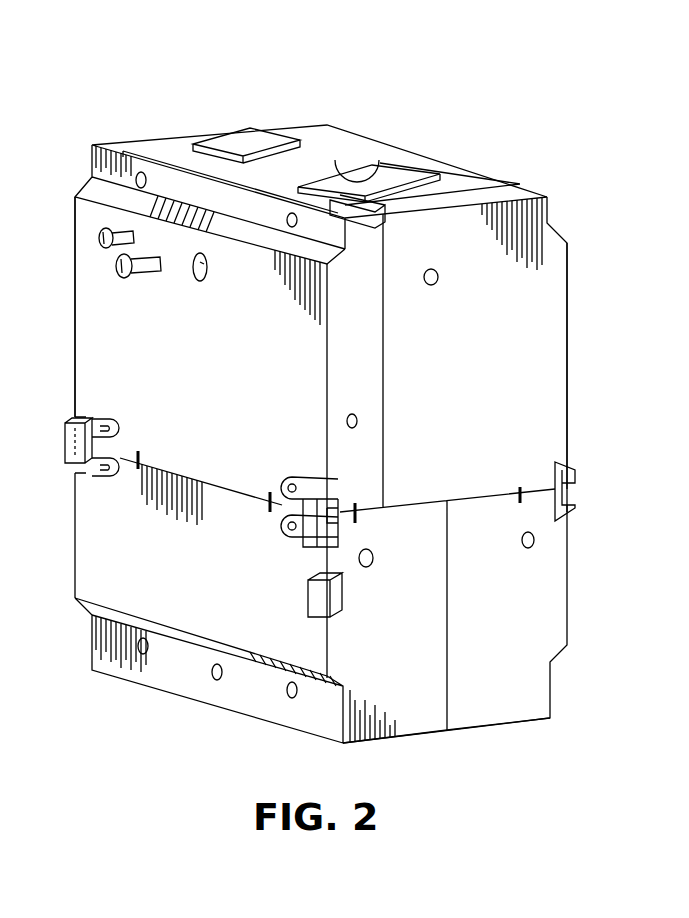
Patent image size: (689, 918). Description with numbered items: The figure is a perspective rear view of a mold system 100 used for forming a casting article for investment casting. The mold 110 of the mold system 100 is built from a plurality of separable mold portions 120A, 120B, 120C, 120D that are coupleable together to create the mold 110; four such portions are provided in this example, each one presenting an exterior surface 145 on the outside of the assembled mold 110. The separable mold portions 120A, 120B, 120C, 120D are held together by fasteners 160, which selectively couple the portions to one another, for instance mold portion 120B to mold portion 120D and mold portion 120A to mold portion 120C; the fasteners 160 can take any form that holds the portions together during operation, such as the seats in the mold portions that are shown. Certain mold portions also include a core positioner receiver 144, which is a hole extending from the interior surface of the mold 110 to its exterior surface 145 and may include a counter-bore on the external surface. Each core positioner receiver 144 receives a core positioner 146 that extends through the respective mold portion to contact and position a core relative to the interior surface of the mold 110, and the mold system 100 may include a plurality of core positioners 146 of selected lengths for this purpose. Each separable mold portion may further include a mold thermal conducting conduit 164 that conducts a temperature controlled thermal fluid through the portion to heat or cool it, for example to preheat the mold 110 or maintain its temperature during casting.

The mold system 100 is at (340, 448).
The mold 110 is at (340, 462).
The separable mold portion 120A is at (418, 708).
The separable mold portion 120B is at (512, 703).
The separable mold portion 120C is at (88, 304).
The separable mold portion 120D is at (543, 398).
The core positioner receiver 144 is at (197, 280).
The exterior surface 145 is at (237, 385).
The core positioner 146 is at (116, 262).
The fastener 160 is at (362, 202).
The mold thermal conducting conduit 164 is at (438, 283).